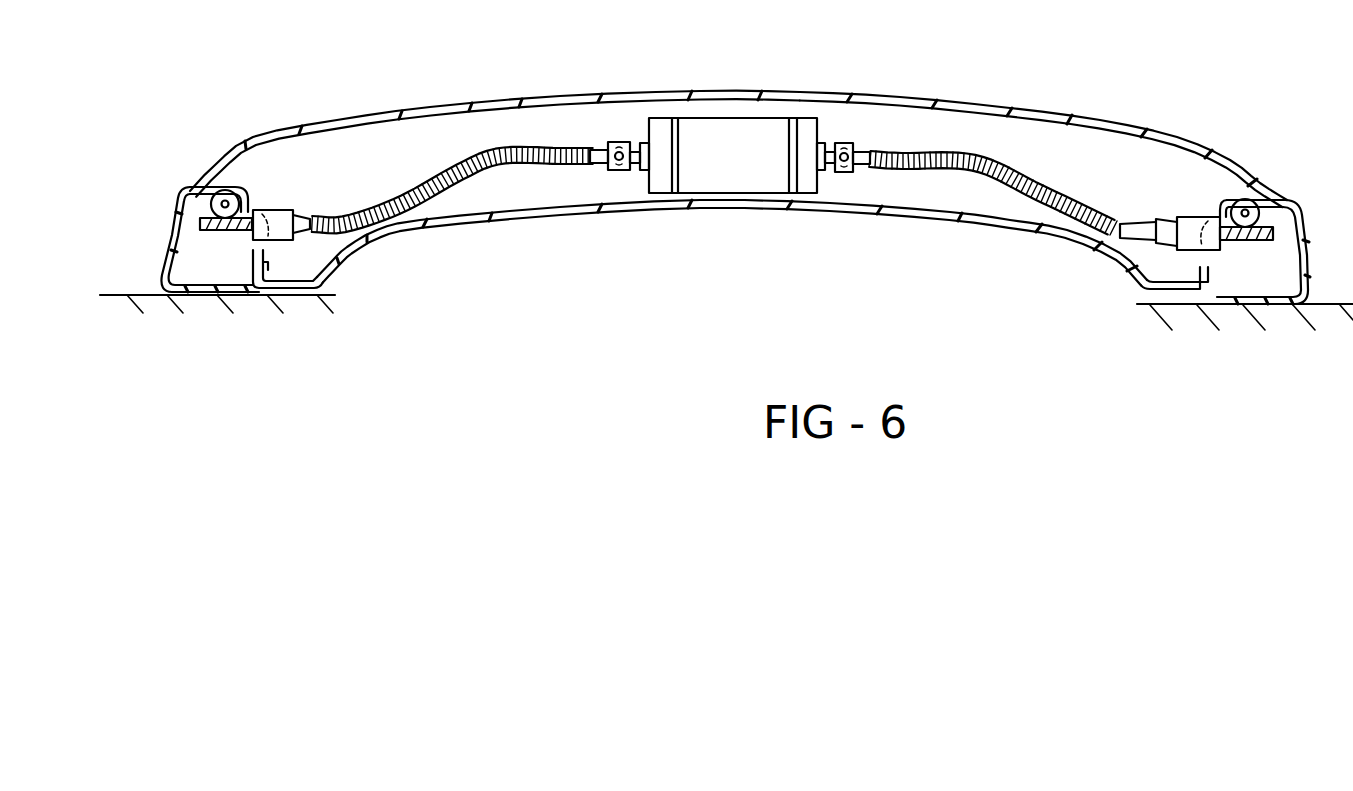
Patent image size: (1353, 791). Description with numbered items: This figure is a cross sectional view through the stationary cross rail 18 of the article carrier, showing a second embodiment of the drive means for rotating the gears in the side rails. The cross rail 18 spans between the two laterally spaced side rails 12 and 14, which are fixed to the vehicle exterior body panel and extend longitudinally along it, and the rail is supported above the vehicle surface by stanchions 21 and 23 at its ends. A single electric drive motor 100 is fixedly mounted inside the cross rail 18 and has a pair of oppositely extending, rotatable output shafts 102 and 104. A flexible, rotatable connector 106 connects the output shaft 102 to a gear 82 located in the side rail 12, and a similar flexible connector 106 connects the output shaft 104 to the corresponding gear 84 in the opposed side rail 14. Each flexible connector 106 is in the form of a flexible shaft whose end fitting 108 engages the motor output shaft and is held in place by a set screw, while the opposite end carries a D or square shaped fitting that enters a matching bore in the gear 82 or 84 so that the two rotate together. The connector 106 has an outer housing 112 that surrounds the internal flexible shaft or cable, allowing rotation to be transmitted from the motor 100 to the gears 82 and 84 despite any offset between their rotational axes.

The side rail 12 is at (190, 191).
The side rail 14 is at (1299, 241).
The cross rail 18 is at (522, 27).
The stanchion 21 is at (1142, 128).
The stanchion 23 is at (262, 144).
The gear 82 is at (1287, 200).
The gear 84 is at (200, 222).
The electric drive motor 100 is at (727, 140).
The output shaft 102 is at (832, 171).
The output shaft 104 is at (636, 170).
The flexible rotatable connector 106 is at (352, 207).
The end fitting 108 is at (622, 143).
The outer housing 112 is at (1035, 180).